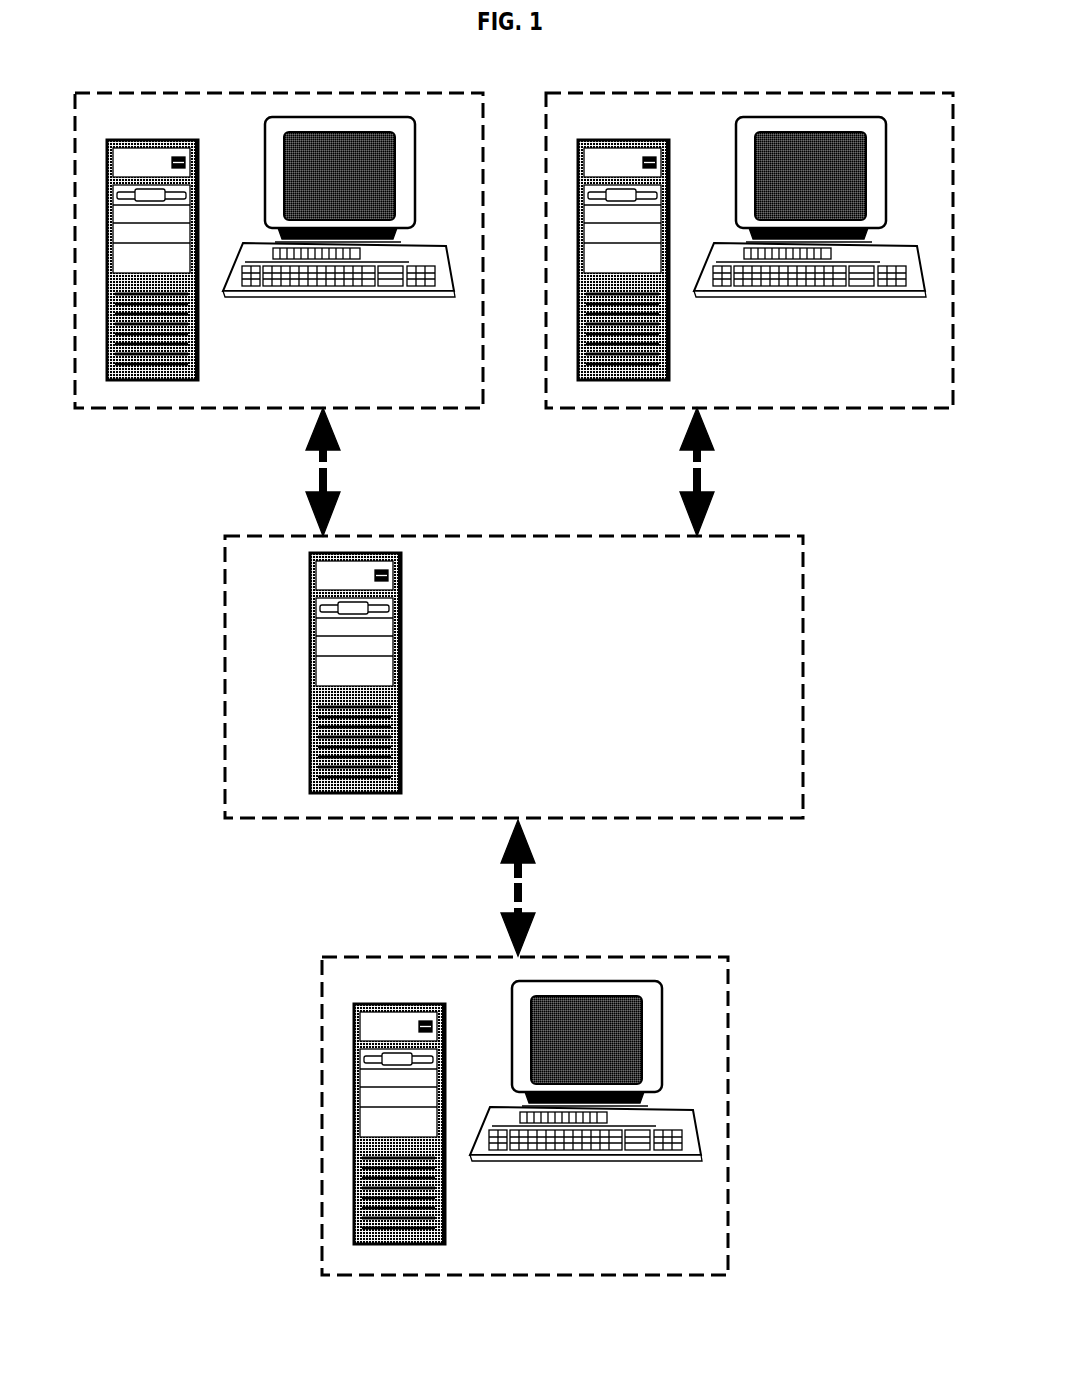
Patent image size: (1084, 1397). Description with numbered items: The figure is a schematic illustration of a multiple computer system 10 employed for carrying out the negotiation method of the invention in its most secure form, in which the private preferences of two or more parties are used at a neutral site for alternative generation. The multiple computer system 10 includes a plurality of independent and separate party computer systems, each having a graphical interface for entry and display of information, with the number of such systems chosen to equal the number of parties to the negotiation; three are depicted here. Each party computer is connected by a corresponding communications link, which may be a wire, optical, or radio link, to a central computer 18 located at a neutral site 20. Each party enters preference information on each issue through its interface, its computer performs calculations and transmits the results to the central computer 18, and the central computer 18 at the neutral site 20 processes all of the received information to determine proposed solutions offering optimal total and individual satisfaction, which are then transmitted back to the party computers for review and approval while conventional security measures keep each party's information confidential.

The multiple computer system 10 is at (505, 680).
The central computer 18 is at (316, 834).
The neutral site 20 is at (752, 753).